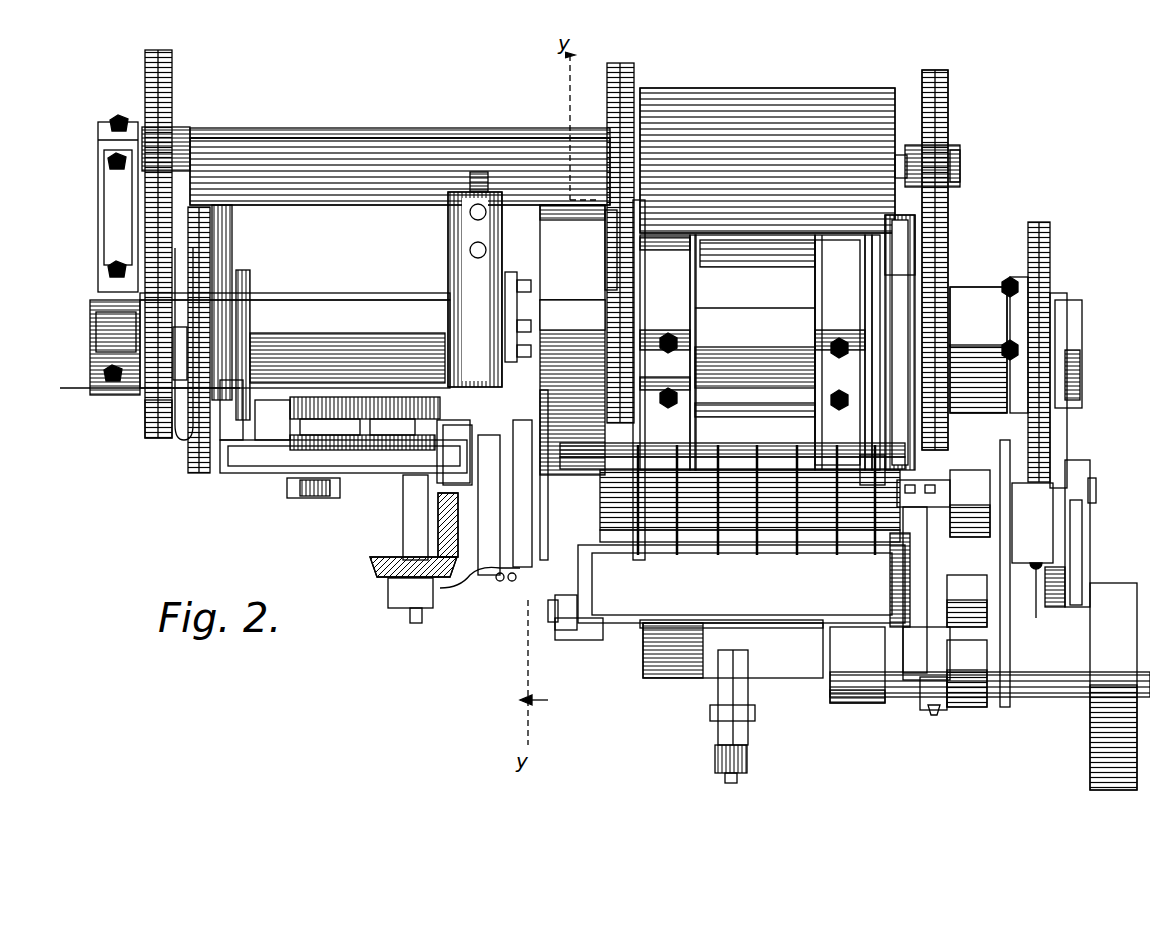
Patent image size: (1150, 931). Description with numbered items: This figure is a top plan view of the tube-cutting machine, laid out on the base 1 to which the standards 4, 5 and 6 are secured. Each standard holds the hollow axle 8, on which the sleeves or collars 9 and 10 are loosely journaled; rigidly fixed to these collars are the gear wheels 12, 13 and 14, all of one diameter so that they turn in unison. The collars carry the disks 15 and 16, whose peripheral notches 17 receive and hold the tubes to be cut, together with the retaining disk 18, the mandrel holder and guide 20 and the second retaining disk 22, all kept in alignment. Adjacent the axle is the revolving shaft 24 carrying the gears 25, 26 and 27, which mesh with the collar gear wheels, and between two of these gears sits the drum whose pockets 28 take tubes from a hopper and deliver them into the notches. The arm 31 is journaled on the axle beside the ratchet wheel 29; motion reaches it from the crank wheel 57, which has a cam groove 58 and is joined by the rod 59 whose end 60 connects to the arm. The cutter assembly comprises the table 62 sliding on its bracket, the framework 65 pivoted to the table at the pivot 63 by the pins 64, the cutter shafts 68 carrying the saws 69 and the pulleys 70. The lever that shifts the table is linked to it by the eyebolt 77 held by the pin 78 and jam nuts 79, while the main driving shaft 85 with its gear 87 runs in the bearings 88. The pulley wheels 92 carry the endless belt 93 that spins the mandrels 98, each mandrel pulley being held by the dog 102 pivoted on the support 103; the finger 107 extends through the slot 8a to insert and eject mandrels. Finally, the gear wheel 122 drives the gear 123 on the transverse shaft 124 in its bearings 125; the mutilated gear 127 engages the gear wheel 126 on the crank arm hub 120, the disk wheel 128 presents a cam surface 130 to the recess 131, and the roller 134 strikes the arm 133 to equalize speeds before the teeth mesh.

The base 1 is at (412, 188).
The standard 4 is at (690, 300).
The standard 5 is at (825, 250).
The standard 6 is at (108, 220).
The hollow axle 8 is at (92, 348).
The slot 8a is at (288, 335).
The sleeve or collar 9 is at (948, 300).
The sleeve or collar 10 is at (612, 285).
The gear wheel 12 is at (935, 268).
The gear wheel 13 is at (600, 300).
The gear wheel 14 is at (148, 408).
The plate or disk 15 is at (880, 318).
The plate or disk 16 is at (672, 350).
The recess or notch 17 is at (866, 298).
The retaining or holding disk 18 is at (912, 260).
The mandrel holder and guide 20 is at (572, 387).
The second retaining or holding disk 22 is at (187, 462).
The revolving shaft 24 is at (378, 150).
The gear 25 is at (950, 98).
The gear 26 is at (636, 92).
The gear 27 is at (176, 122).
The pocket or receptacle 28 is at (808, 118).
The ratchet wheel 29 is at (1050, 250).
The arm 31 is at (1060, 462).
The crank wheel 57 is at (1068, 580).
The cam groove 58 is at (1085, 590).
The rod or bar 59 is at (1084, 522).
The end of rod 60 is at (1090, 480).
The table or supporting plate 62 is at (688, 658).
The pivot 63 is at (640, 598).
The bolt or pin 64 is at (548, 615).
The framework 65 is at (592, 640).
The cutter shaft 68 is at (770, 460).
The saw or knife 69 is at (640, 540).
The pulley 70 is at (965, 480).
The adjustable eyebolt or link 77 is at (722, 730).
The pin 78 is at (755, 713).
The jam nut 79 is at (748, 760).
The main driving shaft 85 is at (1068, 685).
The gear 87 is at (935, 700).
The bearing 88 is at (862, 700).
The pulley wheel 92 is at (520, 450).
The endless belt 93 is at (532, 465).
The mandrel 98 is at (815, 460).
The dog or lever 102 is at (512, 272).
The support 103 is at (464, 224).
The inserting and ejecting finger 107 is at (245, 272).
The crank arm hub 120 is at (300, 498).
The gear wheel 122 is at (436, 510).
The gear 123 is at (372, 575).
The transverse shaft 124 is at (408, 490).
The bearing 125 is at (415, 612).
The gear wheel 126 is at (350, 395).
The sectional or mutilated gear 127 is at (398, 395).
The disk wheel 128 is at (398, 420).
The cam or extended surface 130 is at (380, 430).
The recessed or cut away portion 131 is at (440, 470).
The arm or projection 133 is at (270, 445).
The projection or anti-friction roller 134 is at (450, 445).